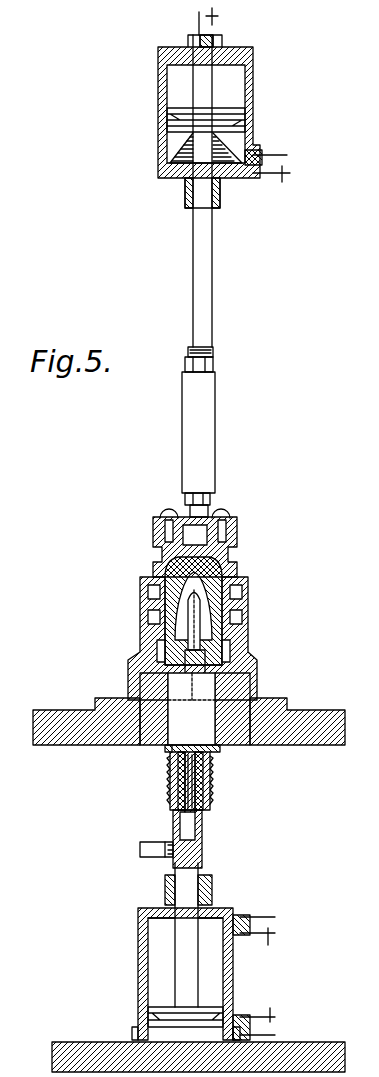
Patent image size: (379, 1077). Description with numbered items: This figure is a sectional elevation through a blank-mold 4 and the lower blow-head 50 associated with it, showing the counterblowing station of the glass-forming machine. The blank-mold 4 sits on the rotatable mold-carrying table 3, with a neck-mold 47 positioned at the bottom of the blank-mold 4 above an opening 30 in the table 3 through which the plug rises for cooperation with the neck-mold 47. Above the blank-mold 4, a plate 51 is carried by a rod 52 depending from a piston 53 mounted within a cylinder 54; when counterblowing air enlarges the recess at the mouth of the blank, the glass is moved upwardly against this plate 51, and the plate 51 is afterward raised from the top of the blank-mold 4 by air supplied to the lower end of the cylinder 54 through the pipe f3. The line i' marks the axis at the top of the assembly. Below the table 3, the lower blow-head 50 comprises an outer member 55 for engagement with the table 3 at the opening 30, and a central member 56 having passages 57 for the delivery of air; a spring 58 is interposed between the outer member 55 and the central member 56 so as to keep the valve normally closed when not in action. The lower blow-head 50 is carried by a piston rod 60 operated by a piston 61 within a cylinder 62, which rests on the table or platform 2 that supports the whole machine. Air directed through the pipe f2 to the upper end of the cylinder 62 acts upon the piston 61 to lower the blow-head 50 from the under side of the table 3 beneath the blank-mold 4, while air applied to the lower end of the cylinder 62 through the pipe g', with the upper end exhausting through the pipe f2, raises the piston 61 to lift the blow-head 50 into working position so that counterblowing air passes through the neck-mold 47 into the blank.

The axis line i' is at (216, 21).
The cylinder 54 is at (255, 78).
The piston 53 is at (246, 118).
The pipe f3 is at (267, 175).
The rod 52 is at (212, 296).
The plate 51 is at (238, 542).
The blank-mold 4 is at (249, 600).
The neck-mold 47 is at (225, 664).
The opening 30 is at (195, 709).
The table 3 is at (318, 746).
The outer member 55 is at (210, 751).
The passages 57 is at (170, 755).
The lower blow-head 50 is at (206, 778).
The central member 56 is at (205, 792).
The spring 58 is at (176, 786).
The piston rod 60 is at (200, 868).
The cylinder 62 is at (140, 955).
The pipe f2 is at (259, 936).
The piston 61 is at (230, 1010).
The pipe g' is at (263, 1016).
The table or platform 2 is at (306, 1046).